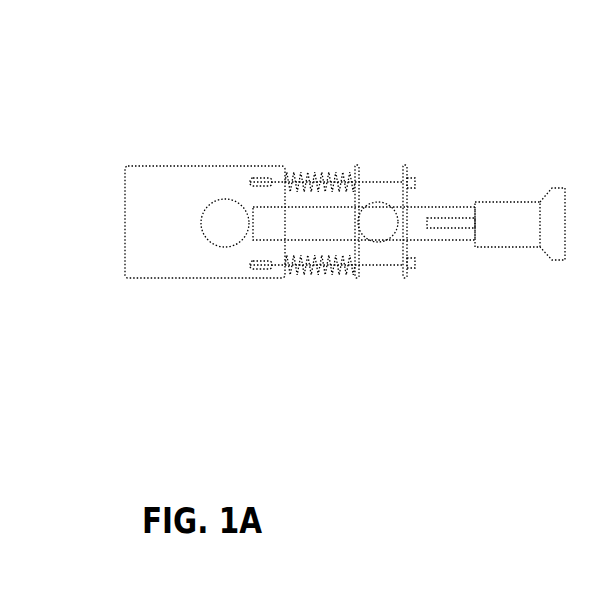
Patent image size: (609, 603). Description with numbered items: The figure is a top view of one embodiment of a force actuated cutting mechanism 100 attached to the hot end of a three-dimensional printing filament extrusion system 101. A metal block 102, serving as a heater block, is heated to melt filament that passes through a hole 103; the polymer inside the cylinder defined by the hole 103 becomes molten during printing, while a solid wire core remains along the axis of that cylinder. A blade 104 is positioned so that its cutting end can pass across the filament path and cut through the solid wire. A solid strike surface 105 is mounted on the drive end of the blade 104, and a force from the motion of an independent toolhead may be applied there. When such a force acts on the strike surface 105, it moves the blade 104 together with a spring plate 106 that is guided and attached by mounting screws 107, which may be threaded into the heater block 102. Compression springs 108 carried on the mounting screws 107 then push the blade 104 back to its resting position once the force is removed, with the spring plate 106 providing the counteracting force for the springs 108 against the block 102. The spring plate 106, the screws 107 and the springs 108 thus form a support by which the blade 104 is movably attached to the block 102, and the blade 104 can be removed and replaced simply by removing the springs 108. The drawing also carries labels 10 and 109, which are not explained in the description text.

The system 10 is at (608, 130).
The cutting mechanism 100 is at (462, 170).
The 3D printing filament extrusion system 101 is at (92, 180).
The metal block 102 is at (158, 258).
The hole 103 is at (223, 215).
The blade 104 is at (278, 222).
The solid strike surface 105 is at (548, 240).
The spring plate 106 is at (358, 278).
The mounting screws 107 is at (418, 186).
The compression springs 108 is at (320, 187).
The outer plate 109 is at (407, 273).